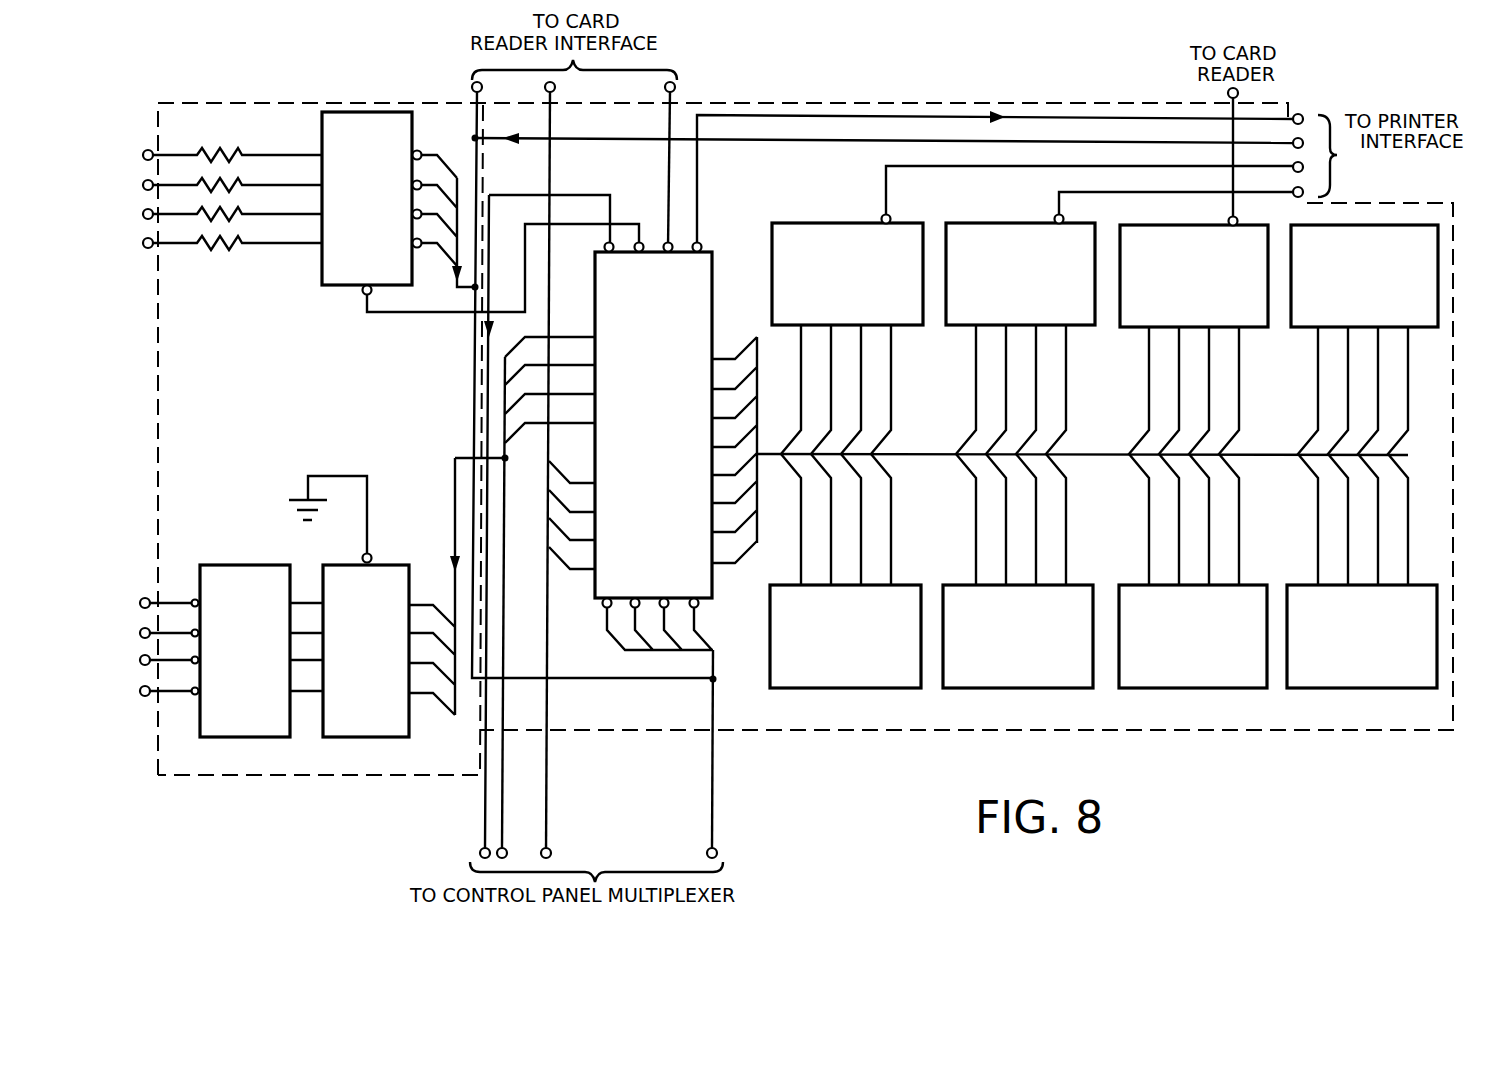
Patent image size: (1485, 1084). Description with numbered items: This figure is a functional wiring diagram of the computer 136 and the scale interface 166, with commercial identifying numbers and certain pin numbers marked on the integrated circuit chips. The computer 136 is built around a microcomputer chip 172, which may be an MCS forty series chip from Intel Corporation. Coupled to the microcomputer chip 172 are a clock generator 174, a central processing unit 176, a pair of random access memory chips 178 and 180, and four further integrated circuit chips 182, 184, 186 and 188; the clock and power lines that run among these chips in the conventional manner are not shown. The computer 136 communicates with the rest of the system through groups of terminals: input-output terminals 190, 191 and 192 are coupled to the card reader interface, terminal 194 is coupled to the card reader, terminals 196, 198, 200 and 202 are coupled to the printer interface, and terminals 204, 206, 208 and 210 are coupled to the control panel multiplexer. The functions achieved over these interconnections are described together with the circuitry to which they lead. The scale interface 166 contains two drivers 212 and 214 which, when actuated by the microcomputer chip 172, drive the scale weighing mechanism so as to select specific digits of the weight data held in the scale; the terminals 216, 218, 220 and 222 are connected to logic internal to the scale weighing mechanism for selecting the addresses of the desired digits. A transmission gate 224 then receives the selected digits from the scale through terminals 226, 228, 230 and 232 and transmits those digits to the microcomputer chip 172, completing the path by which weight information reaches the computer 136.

The computer 136 is at (1092, 716).
The scale interface 166 is at (447, 408).
The microcomputer chip 172 is at (602, 606).
The clock generator 174 is at (1344, 225).
The central processing unit 176 is at (1180, 224).
The random access memory chip 178 is at (1007, 223).
The random access memory chip 180 is at (832, 223).
The integrated circuit chip 182 is at (1298, 585).
The integrated circuit chip 184 is at (1138, 585).
The integrated circuit chip 186 is at (960, 585).
The integrated circuit chip 188 is at (790, 585).
The input-output terminal 190 is at (472, 89).
The input-output terminal 191 is at (545, 89).
The input-output terminal 192 is at (665, 89).
The terminal 194 is at (1228, 93).
The terminal 196 is at (1295, 127).
The terminal 198 is at (1295, 151).
The terminal 200 is at (1295, 175).
The terminal 202 is at (1297, 199).
The terminal 204 is at (482, 849).
The terminal 206 is at (522, 843).
The terminal 208 is at (551, 850).
The terminal 210 is at (718, 850).
The driver 212 is at (244, 565).
The driver 214 is at (344, 565).
The terminal 216 is at (142, 602).
The terminal 218 is at (142, 631).
The terminal 220 is at (142, 659).
The terminal 222 is at (142, 690).
The transmission gate 224 is at (322, 122).
The terminal 226 is at (145, 153).
The terminal 228 is at (145, 182).
The terminal 230 is at (145, 211).
The terminal 232 is at (145, 240).